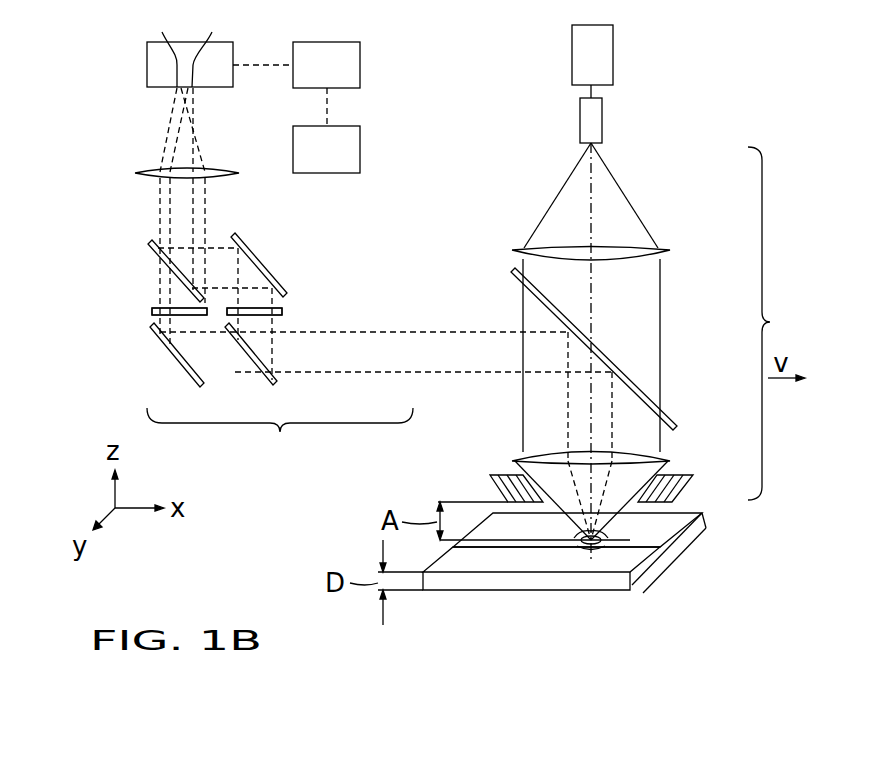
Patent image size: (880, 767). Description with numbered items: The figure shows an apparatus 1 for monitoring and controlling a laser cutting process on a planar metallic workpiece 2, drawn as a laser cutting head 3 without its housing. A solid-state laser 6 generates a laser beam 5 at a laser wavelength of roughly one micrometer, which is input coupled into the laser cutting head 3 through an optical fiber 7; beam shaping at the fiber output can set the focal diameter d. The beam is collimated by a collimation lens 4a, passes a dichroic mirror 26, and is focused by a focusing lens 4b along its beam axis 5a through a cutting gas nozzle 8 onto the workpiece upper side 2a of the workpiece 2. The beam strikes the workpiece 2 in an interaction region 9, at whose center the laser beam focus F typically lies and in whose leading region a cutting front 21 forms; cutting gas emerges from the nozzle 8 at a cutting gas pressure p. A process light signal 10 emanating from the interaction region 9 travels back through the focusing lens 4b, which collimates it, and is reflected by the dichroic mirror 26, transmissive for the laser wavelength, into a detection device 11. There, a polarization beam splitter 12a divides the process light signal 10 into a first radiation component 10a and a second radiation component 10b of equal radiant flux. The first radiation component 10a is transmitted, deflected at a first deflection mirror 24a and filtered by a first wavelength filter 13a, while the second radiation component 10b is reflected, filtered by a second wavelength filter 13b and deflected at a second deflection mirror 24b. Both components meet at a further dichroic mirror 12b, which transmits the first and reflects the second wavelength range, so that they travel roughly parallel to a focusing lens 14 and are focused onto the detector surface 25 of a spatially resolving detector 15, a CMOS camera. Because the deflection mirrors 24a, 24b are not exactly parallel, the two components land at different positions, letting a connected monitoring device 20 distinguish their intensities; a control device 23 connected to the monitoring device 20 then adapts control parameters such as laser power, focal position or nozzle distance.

The apparatus 1 is at (716, 94).
The workpiece 2 is at (636, 508).
The workpiece upper side 2a is at (668, 527).
The laser cutting head 3 is at (770, 323).
The collimation lens 4a is at (637, 253).
The focusing lens 4b is at (643, 460).
The laser beam 5 is at (660, 308).
The beam axis 5a is at (593, 308).
The solid-state laser 6 is at (613, 62).
The optical fiber 7 is at (596, 115).
The cutting gas nozzle 8 is at (680, 487).
The interaction region 9 is at (613, 550).
The process light signal 10 is at (465, 350).
The first radiation component 10a is at (152, 318).
The second radiation component 10b is at (268, 322).
The detection device 11 is at (280, 437).
The beam splitter 12a is at (268, 375).
The dichroic mirror 12b is at (160, 258).
The first wavelength filter 13a is at (155, 310).
The second wavelength filter 13b is at (288, 310).
The focusing lens 14 is at (152, 172).
The spatially resolving detector 15 is at (150, 66).
The monitoring device 20 is at (360, 62).
The control device 23 is at (360, 148).
The first deflection mirror 24a is at (172, 352).
The second deflection mirror 24b is at (258, 250).
The detector surface 25 is at (158, 92).
The dichroic mirror 26 is at (627, 373).
The focal diameter d is at (600, 146).
The cutting gas pressure p is at (605, 541).
The laser beam focus F is at (587, 546).
The cutting front 21 is at (603, 545).